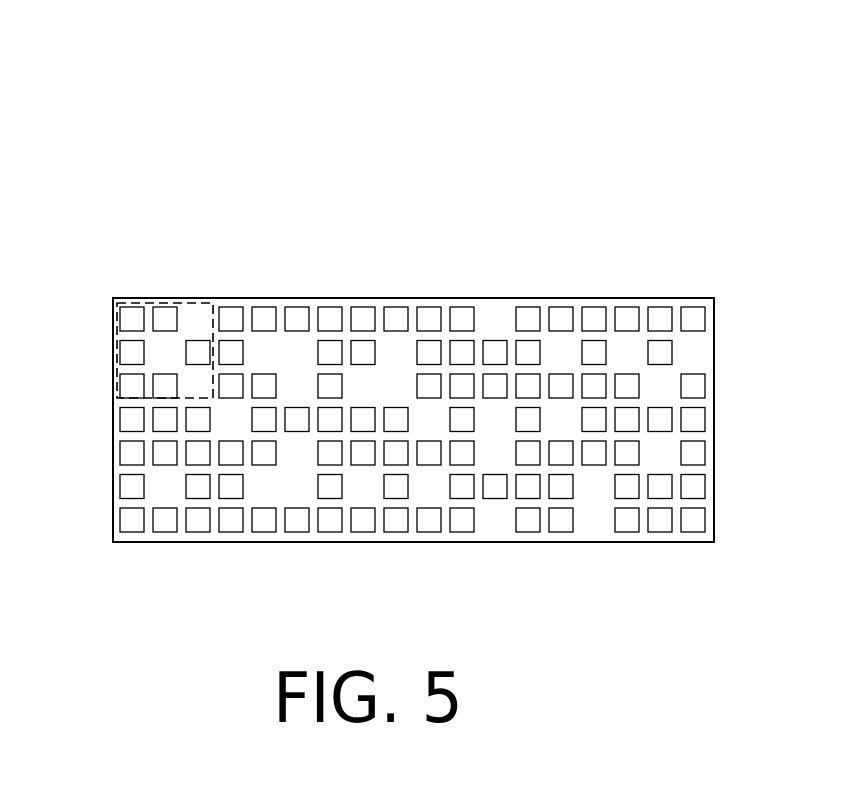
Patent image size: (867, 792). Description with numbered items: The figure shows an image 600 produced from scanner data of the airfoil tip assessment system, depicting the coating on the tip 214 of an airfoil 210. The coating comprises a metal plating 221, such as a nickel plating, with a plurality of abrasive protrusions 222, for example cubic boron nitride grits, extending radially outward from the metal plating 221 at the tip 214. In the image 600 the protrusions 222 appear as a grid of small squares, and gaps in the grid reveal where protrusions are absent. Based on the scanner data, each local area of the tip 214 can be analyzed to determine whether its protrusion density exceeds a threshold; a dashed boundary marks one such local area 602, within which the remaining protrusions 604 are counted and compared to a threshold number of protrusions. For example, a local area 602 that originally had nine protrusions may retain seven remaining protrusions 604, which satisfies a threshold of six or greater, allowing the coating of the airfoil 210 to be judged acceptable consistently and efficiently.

The image 600 is at (737, 104).
The airfoil 210 is at (573, 150).
The tip 214 is at (455, 293).
The metal plating 221 is at (157, 488).
The protrusions 222 is at (270, 317).
The local area 602 is at (114, 343).
The remaining protrusions 604 is at (200, 350).